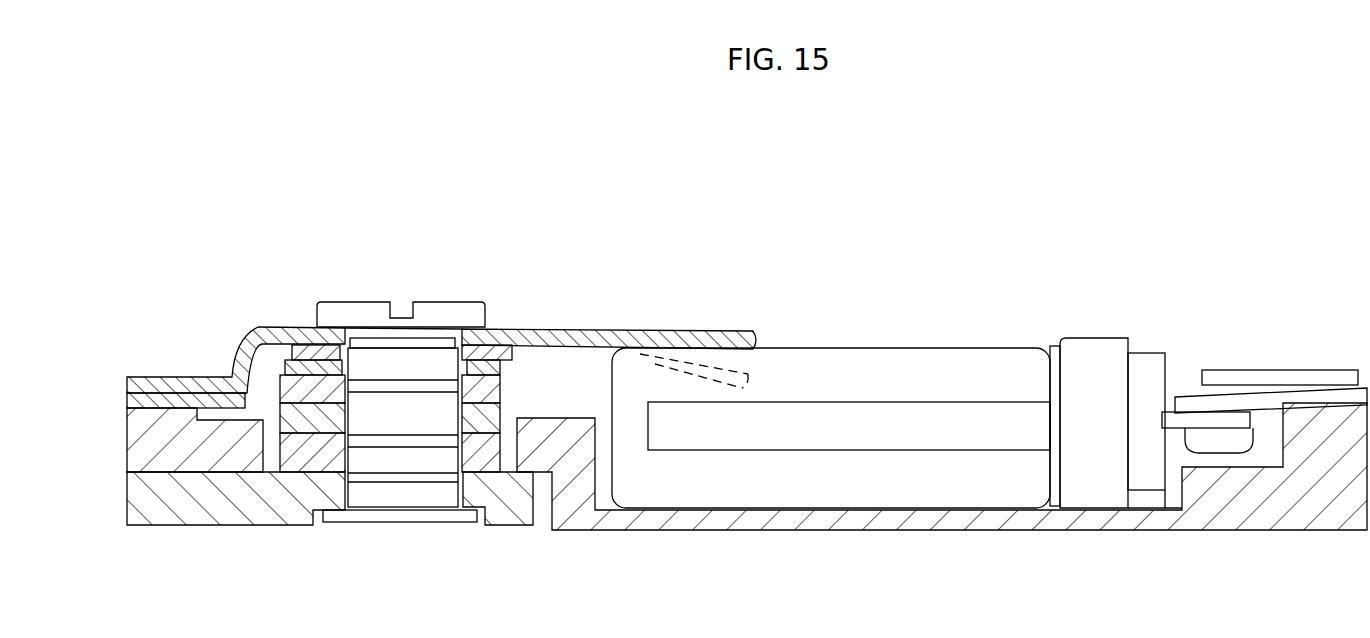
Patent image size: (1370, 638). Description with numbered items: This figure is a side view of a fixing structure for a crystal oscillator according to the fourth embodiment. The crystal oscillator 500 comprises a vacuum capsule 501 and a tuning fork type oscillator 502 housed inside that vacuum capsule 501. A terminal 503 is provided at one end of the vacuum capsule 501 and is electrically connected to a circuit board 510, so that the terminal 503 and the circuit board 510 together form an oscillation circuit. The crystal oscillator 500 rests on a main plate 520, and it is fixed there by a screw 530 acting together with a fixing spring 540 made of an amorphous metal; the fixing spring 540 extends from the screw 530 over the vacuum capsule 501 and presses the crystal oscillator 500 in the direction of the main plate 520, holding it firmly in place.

The crystal oscillator 500 is at (932, 338).
The vacuum capsule 501 is at (838, 347).
The tuning fork type oscillator 502 is at (917, 400).
The terminal 503 is at (1198, 418).
The circuit board 510 is at (1320, 370).
The main plate 520 is at (803, 530).
The screw 530 is at (443, 308).
The fixing spring 540 is at (577, 333).